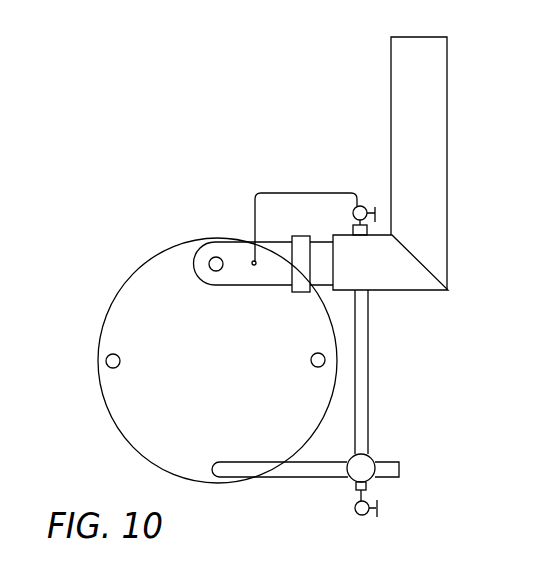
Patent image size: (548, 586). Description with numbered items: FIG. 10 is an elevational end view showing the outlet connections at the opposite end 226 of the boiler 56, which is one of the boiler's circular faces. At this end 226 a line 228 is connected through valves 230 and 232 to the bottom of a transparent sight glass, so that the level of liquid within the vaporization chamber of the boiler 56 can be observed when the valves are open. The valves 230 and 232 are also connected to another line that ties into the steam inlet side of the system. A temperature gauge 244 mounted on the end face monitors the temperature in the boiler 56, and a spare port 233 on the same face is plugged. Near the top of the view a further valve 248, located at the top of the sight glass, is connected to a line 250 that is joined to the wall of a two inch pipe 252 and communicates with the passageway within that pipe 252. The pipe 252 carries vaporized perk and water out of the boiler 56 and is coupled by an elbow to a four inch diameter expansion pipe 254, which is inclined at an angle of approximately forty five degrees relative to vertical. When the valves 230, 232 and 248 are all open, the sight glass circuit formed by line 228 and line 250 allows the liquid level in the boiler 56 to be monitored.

The boiler 56 is at (94, 298).
The opposite end 226 is at (162, 297).
The line 228 is at (323, 478).
The valve 230 is at (368, 456).
The valve 232 is at (357, 517).
The spare port 233 is at (108, 368).
The temperature gauge 244 is at (314, 366).
The valve 248 is at (366, 205).
The line 250 is at (297, 192).
The pipe 252 is at (272, 277).
The expansion pipe 254 is at (421, 117).